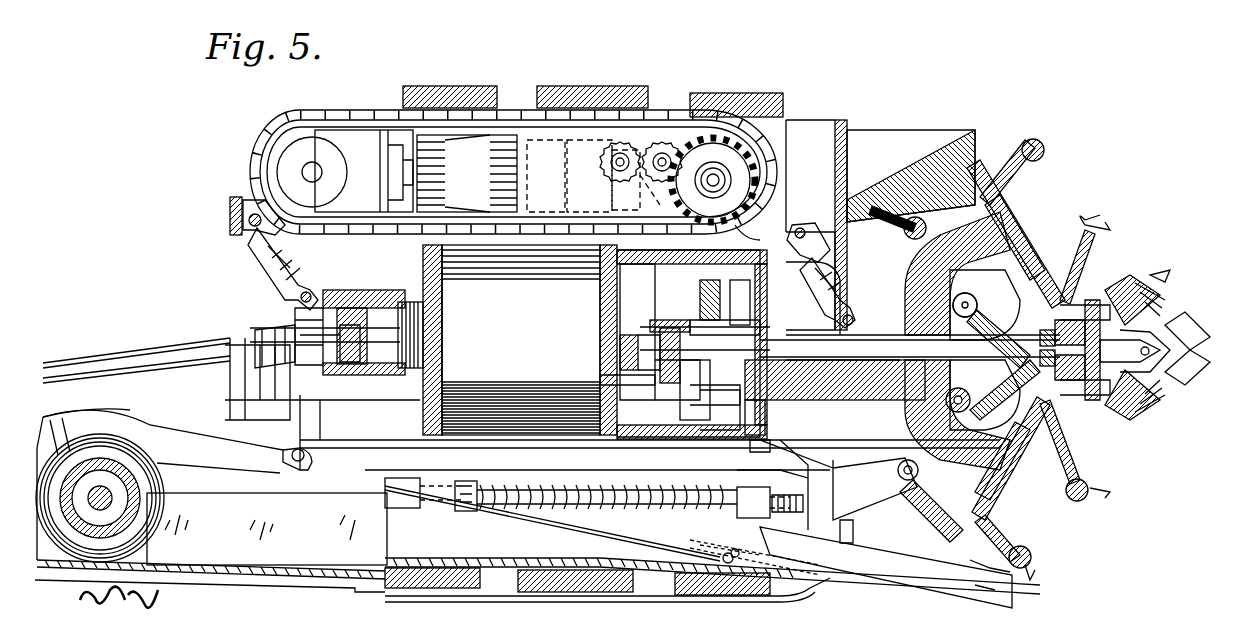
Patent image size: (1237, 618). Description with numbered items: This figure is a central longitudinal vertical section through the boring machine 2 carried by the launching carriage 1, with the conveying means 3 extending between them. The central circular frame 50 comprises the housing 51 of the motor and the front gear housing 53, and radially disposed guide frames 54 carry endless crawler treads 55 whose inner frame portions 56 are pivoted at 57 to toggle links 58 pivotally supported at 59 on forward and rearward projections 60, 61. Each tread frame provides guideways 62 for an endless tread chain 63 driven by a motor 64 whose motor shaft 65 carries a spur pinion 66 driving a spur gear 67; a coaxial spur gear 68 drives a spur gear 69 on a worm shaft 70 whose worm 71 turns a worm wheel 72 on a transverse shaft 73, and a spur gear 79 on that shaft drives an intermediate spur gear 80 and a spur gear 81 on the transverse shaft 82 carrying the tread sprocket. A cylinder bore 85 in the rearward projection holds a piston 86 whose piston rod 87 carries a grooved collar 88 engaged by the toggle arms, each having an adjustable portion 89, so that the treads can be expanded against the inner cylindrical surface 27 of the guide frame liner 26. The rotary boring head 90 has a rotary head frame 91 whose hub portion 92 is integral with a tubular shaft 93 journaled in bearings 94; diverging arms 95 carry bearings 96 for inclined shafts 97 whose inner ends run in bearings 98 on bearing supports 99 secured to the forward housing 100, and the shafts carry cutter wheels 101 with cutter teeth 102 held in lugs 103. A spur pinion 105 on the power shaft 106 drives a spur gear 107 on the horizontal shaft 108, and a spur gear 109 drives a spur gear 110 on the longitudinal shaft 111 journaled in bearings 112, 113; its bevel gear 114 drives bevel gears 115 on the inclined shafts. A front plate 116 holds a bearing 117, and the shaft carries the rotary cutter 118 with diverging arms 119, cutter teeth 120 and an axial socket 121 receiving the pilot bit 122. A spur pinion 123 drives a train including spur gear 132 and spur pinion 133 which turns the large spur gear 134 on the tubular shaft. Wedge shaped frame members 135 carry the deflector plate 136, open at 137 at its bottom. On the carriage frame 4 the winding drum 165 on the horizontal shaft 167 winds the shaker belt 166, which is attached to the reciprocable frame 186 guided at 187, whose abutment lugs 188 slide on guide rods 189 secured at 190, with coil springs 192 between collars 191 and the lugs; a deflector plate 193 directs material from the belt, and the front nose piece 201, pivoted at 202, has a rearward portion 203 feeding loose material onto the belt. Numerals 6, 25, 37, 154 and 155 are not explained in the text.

The launching carriage 1 is at (106, 386).
The boring machine 2 is at (883, 127).
The conveying means 3 is at (118, 434).
The carriage frame 4 is at (268, 576).
The section line 6 is at (398, 588).
The gear 25 is at (695, 130).
The guide frame liner 26 is at (720, 135).
The inner cylindrical surface 27 is at (745, 150).
The cover 37 is at (584, 88).
The central circular frame 50 is at (525, 405).
The housing 51 is at (452, 430).
The front gear housing 53 is at (625, 445).
The guide frames 54 is at (362, 145).
The endless crawler treads 55 is at (290, 125).
The inner frame portions 56 is at (230, 215).
The pivotal connection 57 is at (243, 210).
The toggle links 58 is at (262, 240).
The pivot 59 is at (300, 297).
The forward projection 60 is at (905, 305).
The rearward projection 61 is at (370, 300).
The guideways 62 is at (668, 150).
The endless tread chains 63 is at (775, 170).
The motors 64 is at (490, 160).
The motor shaft 65 is at (528, 140).
The spur pinion 66 is at (538, 140).
The spur gear 67 is at (546, 180).
The spur gear 68 is at (570, 140).
The spur gear 69 is at (614, 100).
The worm shaft 70 is at (589, 180).
The worm 71 is at (648, 185).
The worm wheel 72 is at (623, 150).
The transverse shaft 73 is at (620, 162).
The spur gear 79 is at (638, 135).
The intermediate spur gear 80 is at (668, 160).
The spur gear 81 is at (714, 180).
The transverse shaft 82 is at (775, 140).
The cylinder bore 85 is at (355, 300).
The piston 86 is at (420, 335).
The piston rod 87 is at (328, 365).
The grooved collar 88 is at (300, 365).
The adjustable portion 89 is at (288, 256).
The rotary boring head 90 is at (1050, 228).
The rotary head frame 91 is at (915, 420).
The hub portion 92 is at (990, 340).
The tubular shaft 93 is at (790, 398).
The bearings 94 is at (786, 345).
The diverging arms 95 is at (1030, 215).
The bearings 96 is at (1000, 240).
The inclined shafts 97 is at (945, 522).
The bearings 98 is at (1040, 325).
The bearing supports 99 is at (1008, 278).
The forward housing 100 is at (1060, 325).
The cutter wheels 101 is at (1000, 160).
The cutter teeth 102 is at (1108, 225).
The lugs 103 is at (1043, 145).
The spur pinion 105 is at (612, 320).
The power shaft 106 is at (620, 335).
The spur gear 107 is at (625, 348).
The horizontal shaft 108 is at (625, 360).
The spur gear 109 is at (625, 378).
The spur gear 110 is at (670, 335).
The longitudinal shaft 111 is at (690, 325).
The bearing 112 is at (668, 385).
The bearing 113 is at (1030, 365).
The bevel gear 114 is at (981, 400).
The bevel gears 115 is at (1099, 350).
The front plate 116 is at (1165, 290).
The bearing 117 is at (1160, 330).
The rotary cutter 118 is at (1170, 398).
The diverging arms 119 is at (1135, 280).
The cutter teeth 120 is at (1150, 285).
The axial socket 121 is at (1165, 350).
The pilot bit 122 is at (1190, 338).
The spur pinion 123 is at (722, 440).
The spur gear 132 is at (735, 230).
The spur pinion 133 is at (690, 272).
The large spur gear 134 is at (760, 440).
The wedge shaped frame members 135 is at (918, 140).
The deflector plate 136 is at (958, 145).
The cut-away opening 137 is at (888, 505).
The rail 154 is at (150, 358).
The rail 155 is at (162, 370).
The winding drum 165 is at (135, 520).
The shaker belt 166 is at (192, 455).
The horizontal shaft 167 is at (104, 498).
The reciprocable frame 186 is at (600, 572).
The guide 187 is at (460, 570).
The abutment lugs 188 is at (405, 485).
The guide rods 189 is at (660, 480).
The rod securing point 190 is at (835, 500).
The collars 191 is at (468, 482).
The coil springs 192 is at (640, 508).
The deflector plate 193 is at (58, 418).
The front nose piece 201 is at (960, 592).
The pivot 202 is at (870, 575).
The rearward portion 203 is at (680, 540).